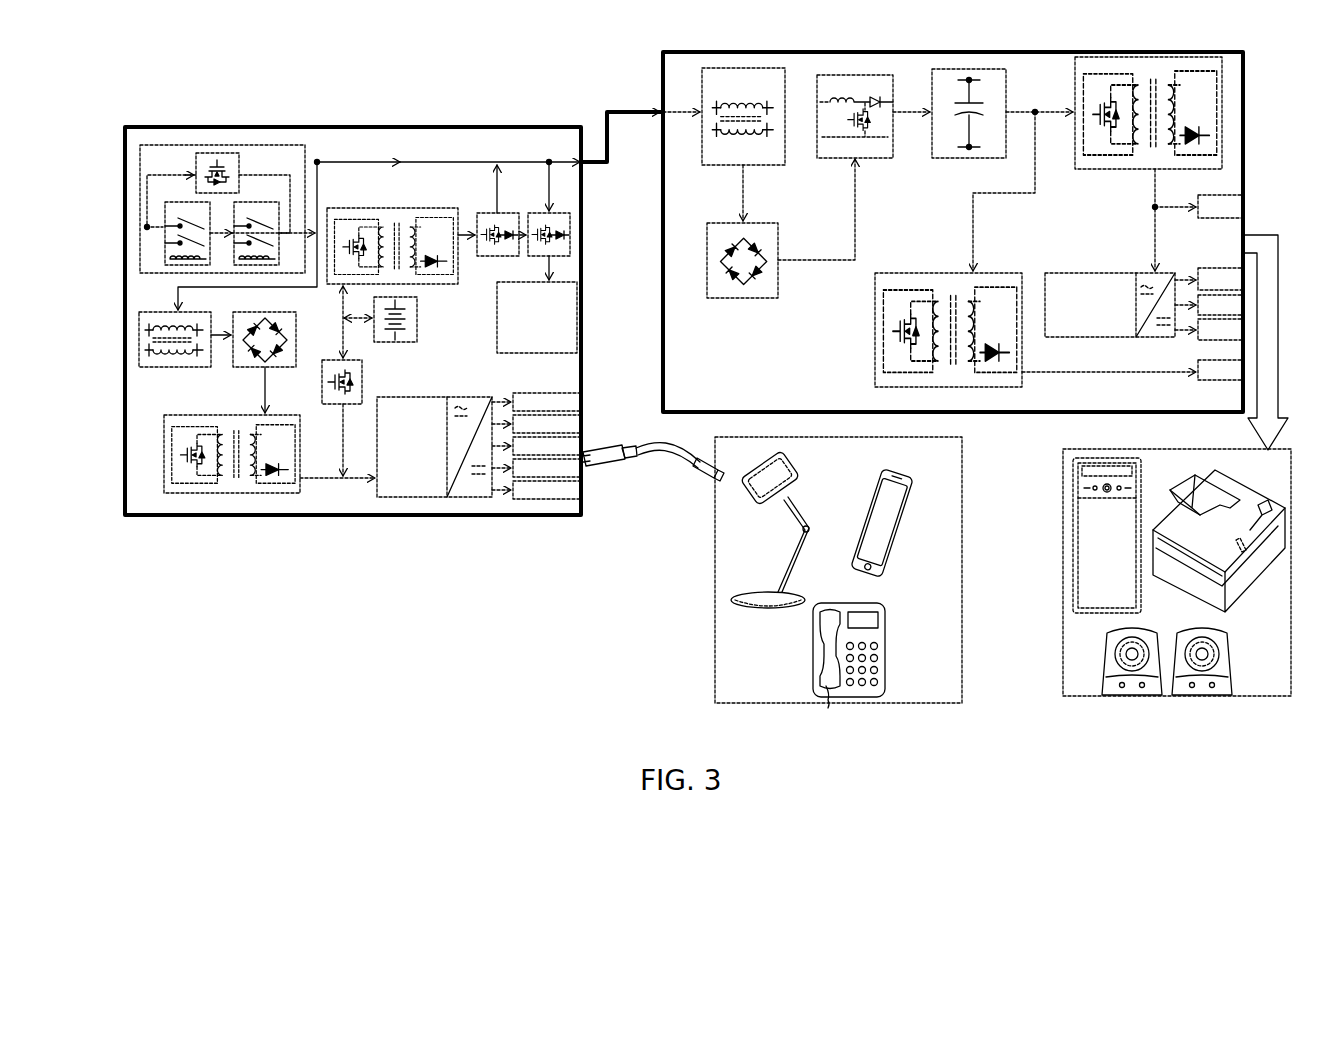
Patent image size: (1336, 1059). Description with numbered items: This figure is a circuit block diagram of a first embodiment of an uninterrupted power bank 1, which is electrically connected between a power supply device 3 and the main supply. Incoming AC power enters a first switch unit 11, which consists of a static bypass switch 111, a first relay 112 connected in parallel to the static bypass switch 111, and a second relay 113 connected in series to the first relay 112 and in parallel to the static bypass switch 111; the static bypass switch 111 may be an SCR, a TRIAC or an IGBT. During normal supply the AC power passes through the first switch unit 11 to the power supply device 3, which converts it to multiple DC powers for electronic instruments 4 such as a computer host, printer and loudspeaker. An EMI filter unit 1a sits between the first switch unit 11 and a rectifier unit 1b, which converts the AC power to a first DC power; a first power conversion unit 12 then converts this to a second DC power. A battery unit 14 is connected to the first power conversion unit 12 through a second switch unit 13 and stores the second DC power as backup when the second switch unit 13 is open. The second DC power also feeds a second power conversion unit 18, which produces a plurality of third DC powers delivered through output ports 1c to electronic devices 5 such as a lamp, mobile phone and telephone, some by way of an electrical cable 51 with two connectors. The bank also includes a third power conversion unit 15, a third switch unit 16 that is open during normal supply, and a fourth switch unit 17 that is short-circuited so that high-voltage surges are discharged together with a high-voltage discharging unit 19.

The uninterrupted power bank 1 is at (554, 123).
The first switch unit 11 is at (305, 143).
The static bypass switch 111 is at (214, 152).
The first relay 112 is at (166, 201).
The second relay 113 is at (262, 201).
The EMI filter unit 1a is at (152, 368).
The rectifier unit 1b is at (297, 350).
The first power conversion unit 12 is at (163, 489).
The second switch unit 13 is at (364, 383).
The battery unit 14 is at (418, 341).
The third power conversion unit 15 is at (401, 193).
The third switch unit 16 is at (486, 215).
The fourth switch unit 17 is at (570, 214).
The second power conversion unit 18 is at (376, 497).
The high-voltage discharging unit 19 is at (571, 297).
The output ports 1c is at (560, 475).
The power supply device 3 is at (657, 68).
The electronic instruments 4 is at (1058, 488).
The electronic devices 5 is at (716, 571).
The electrical cable 51 is at (639, 454).